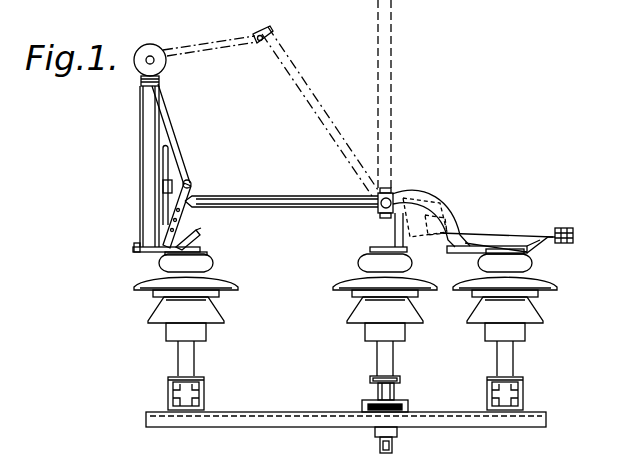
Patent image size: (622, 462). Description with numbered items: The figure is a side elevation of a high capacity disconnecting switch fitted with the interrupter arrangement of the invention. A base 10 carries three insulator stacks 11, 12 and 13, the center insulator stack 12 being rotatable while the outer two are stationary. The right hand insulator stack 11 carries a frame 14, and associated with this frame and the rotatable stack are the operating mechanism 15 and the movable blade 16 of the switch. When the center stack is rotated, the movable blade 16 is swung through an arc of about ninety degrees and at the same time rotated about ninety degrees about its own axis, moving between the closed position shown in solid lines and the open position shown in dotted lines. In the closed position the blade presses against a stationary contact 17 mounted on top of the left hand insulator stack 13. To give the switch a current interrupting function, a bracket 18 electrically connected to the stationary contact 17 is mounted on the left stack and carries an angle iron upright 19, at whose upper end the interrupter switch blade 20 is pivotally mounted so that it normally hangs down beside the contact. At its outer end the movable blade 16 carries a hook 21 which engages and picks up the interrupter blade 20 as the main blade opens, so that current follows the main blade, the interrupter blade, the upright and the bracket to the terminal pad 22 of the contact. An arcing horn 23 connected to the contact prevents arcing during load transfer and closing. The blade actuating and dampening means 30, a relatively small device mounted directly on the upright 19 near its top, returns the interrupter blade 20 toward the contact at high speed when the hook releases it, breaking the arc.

The base 10 is at (236, 420).
The insulator stack 11 is at (522, 311).
The insulator stack 12 is at (360, 312).
The insulator stack 13 is at (210, 306).
The frame 14 is at (462, 243).
The operating mechanism 15 is at (386, 224).
The movable blade 16 is at (363, 106).
The stationary contact 17 is at (188, 225).
The bracket 18 is at (195, 240).
The angle iron upright 19 is at (150, 222).
The interrupter switch blade 20 is at (203, 50).
The hook 21 is at (253, 44).
The terminal pad 22 is at (135, 250).
The arcing horn 23 is at (165, 175).
The blade actuating and dampening means 30 is at (135, 66).